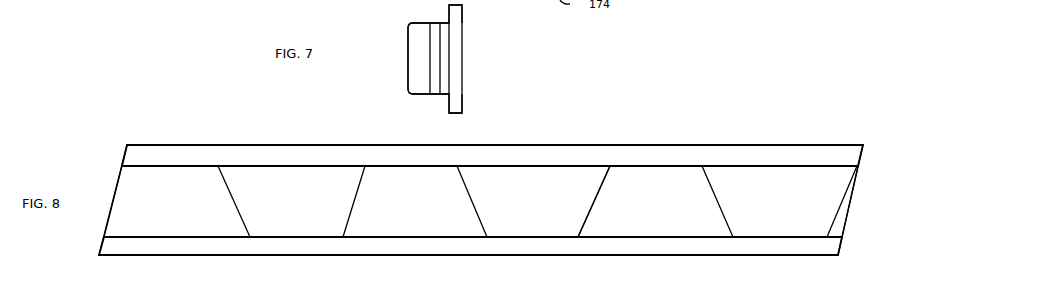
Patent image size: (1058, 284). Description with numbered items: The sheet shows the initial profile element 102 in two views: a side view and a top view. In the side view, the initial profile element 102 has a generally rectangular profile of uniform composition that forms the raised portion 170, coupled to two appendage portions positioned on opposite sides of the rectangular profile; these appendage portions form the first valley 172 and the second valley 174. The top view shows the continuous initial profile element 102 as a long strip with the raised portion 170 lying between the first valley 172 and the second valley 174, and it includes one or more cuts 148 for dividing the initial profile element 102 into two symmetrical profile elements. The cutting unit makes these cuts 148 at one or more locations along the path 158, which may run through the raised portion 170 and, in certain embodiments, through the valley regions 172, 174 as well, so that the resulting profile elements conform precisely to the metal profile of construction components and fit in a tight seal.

In FIG. 7, the initial profile element 102 is at (480, 60).
In FIG. 8, the initial profile element 102 is at (773, 133).
In FIG. 8, the cut 148 is at (633, 165).
In FIG. 8, the path 158 is at (752, 237).
In FIG. 7, the raised portion 170 is at (425, 59).
In FIG. 8, the raised portion 170 is at (667, 190).
In FIG. 7, the first valley 172 is at (457, 16).
In FIG. 8, the first valley 172 is at (823, 135).
In FIG. 7, the second valley 174 is at (455, 103).
In FIG. 8, the second valley 174 is at (788, 244).